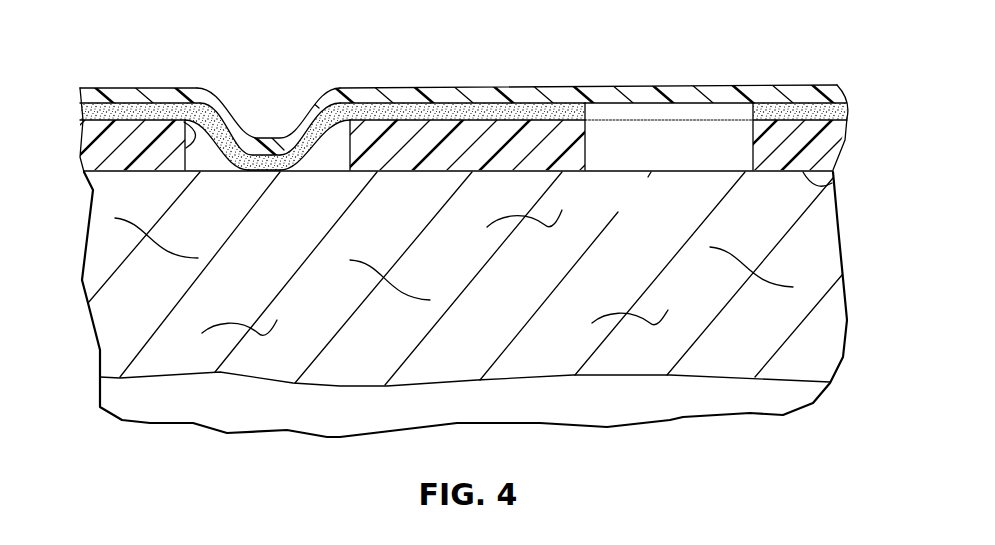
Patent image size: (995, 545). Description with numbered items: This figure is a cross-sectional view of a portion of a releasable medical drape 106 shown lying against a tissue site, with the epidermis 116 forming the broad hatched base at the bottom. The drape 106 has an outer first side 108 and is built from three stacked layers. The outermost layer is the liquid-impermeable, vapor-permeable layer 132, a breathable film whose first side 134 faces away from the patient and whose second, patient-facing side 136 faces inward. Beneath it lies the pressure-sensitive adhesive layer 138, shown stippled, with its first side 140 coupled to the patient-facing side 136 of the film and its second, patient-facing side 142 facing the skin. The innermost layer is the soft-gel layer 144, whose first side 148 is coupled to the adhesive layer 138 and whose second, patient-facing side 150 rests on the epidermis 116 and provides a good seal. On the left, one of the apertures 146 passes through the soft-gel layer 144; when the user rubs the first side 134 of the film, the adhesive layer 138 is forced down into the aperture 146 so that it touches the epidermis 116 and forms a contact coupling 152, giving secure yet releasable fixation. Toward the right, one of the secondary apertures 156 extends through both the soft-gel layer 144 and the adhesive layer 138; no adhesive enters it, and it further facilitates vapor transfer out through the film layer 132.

The releasable medical drape 106 is at (158, 88).
The first side 108 is at (552, 86).
The epidermis 116 is at (458, 340).
The liquid-impermeable, vapor-permeable layer 132 is at (358, 97).
The first side 134 is at (632, 86).
The second, patient-facing side 136 is at (838, 107).
The pressure-sensitive adhesive layer 138 is at (85, 112).
The first side 140 is at (120, 96).
The second, patient-facing side 142 is at (85, 135).
The soft-gel layer 144 is at (835, 137).
The apertures 146 is at (220, 138).
The first side 148 is at (789, 102).
The second, patient-facing side 150 is at (824, 187).
The contact coupling 152 is at (267, 173).
The secondary apertures 156 is at (587, 141).